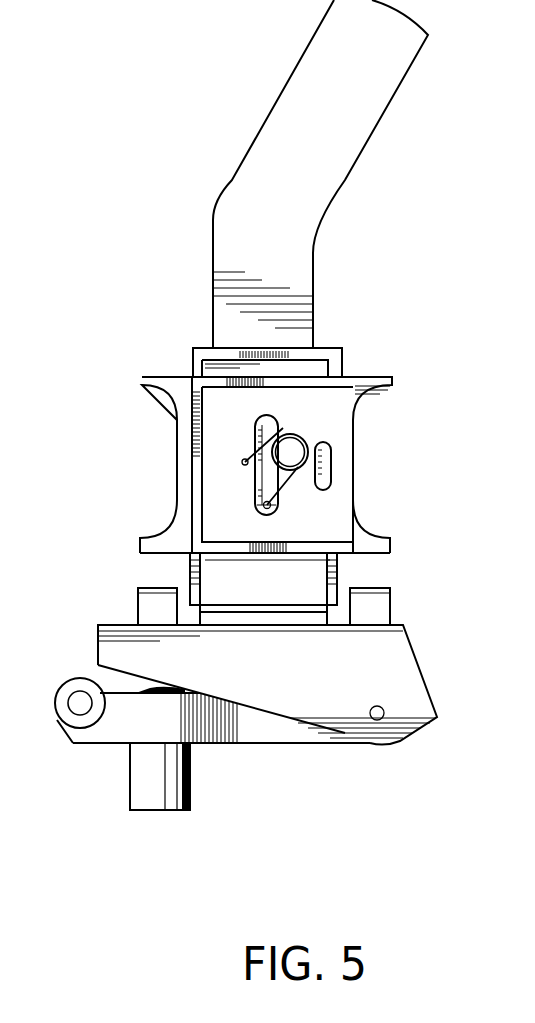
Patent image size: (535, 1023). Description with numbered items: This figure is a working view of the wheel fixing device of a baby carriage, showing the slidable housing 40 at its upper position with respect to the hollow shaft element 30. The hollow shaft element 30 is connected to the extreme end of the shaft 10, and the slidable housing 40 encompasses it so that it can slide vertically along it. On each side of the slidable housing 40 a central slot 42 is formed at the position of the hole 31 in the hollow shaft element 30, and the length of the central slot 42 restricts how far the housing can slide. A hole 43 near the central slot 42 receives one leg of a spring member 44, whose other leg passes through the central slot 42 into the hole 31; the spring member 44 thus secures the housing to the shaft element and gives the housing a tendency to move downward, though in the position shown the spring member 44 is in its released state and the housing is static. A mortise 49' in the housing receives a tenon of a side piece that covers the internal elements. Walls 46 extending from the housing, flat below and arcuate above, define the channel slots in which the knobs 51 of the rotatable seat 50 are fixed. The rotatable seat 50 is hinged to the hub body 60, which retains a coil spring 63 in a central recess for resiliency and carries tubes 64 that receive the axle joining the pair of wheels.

The shaft 10 is at (356, 138).
The hollow shaft element 30 is at (336, 354).
The slidable housing 40 is at (376, 384).
The central slot 42 is at (258, 419).
The hole 43 is at (243, 465).
The spring member 44 is at (302, 441).
The mortise 49' is at (364, 466).
The hole 31 is at (271, 510).
The wall 46 is at (148, 537).
The knob 51 is at (138, 596).
The rotatable seat 50 is at (412, 703).
The hub body 60 is at (243, 735).
The coil spring 63 is at (148, 684).
The tube 64 is at (57, 694).